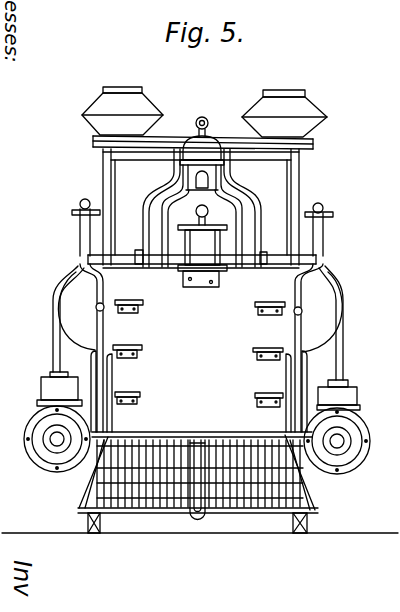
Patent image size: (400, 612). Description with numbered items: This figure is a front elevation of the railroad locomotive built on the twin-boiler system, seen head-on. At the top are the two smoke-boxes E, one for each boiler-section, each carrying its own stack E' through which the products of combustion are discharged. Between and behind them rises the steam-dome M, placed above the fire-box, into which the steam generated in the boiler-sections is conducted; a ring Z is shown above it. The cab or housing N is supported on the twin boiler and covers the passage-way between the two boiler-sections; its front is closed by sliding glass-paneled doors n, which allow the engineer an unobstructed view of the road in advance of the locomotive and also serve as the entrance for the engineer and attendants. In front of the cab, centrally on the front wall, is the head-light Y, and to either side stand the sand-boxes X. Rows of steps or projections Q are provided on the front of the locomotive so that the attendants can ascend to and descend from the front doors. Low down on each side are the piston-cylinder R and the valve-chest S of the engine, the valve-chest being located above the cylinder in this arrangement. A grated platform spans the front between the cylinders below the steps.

The smoke-box E is at (114, 111).
The stack E' is at (290, 113).
The suspension ring Z is at (210, 122).
The cab N is at (303, 171).
The sliding glass-paneled doors n is at (201, 208).
The steam-dome M is at (202, 201).
The head-light Y is at (202, 246).
The sand-box X is at (198, 315).
The steps Q is at (199, 356).
The valve-chest S is at (196, 391).
The piston-cylinder R is at (197, 440).